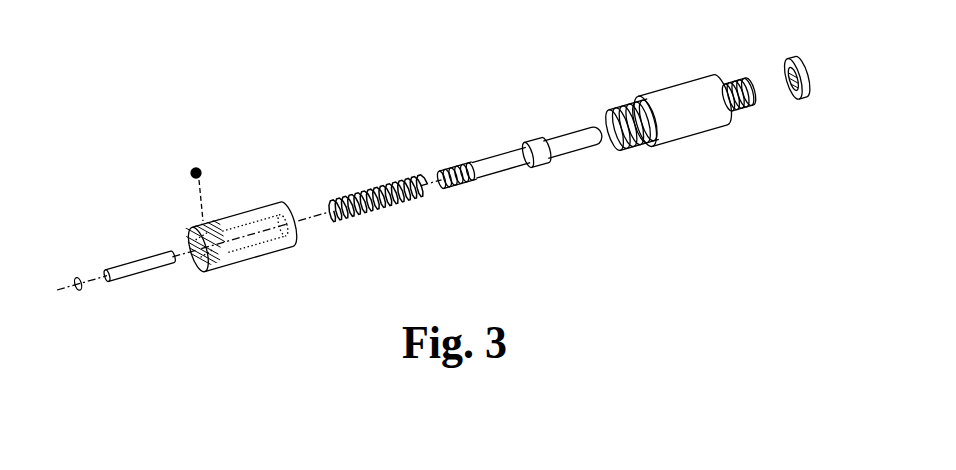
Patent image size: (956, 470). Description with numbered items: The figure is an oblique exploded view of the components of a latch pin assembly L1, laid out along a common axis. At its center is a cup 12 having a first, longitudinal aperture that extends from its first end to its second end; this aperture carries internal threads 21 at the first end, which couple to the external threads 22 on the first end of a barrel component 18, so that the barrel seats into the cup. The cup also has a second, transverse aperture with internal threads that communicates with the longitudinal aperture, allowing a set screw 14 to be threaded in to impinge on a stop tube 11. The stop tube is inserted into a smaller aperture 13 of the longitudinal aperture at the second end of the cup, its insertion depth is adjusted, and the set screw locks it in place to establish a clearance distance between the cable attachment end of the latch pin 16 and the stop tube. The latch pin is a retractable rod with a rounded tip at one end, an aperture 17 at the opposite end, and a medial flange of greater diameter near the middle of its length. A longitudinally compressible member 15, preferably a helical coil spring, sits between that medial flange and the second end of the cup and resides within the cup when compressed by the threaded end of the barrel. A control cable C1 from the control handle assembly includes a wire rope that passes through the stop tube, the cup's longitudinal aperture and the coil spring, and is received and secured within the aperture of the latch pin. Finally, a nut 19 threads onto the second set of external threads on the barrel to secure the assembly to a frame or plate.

The latch pin assembly L1 is at (167, 57).
The control cable C1 is at (80, 290).
The stop tube 11 is at (133, 264).
The cup 12 is at (238, 215).
The smaller aperture 13 is at (193, 254).
The set screw 14 is at (191, 171).
The longitudinally compressible member 15 is at (395, 182).
The latch pin 16 is at (557, 139).
The aperture 17 is at (452, 170).
The barrel component 18 is at (672, 88).
The nut 19 is at (797, 103).
The internal threads 21 is at (277, 245).
The external threads 22 is at (637, 149).